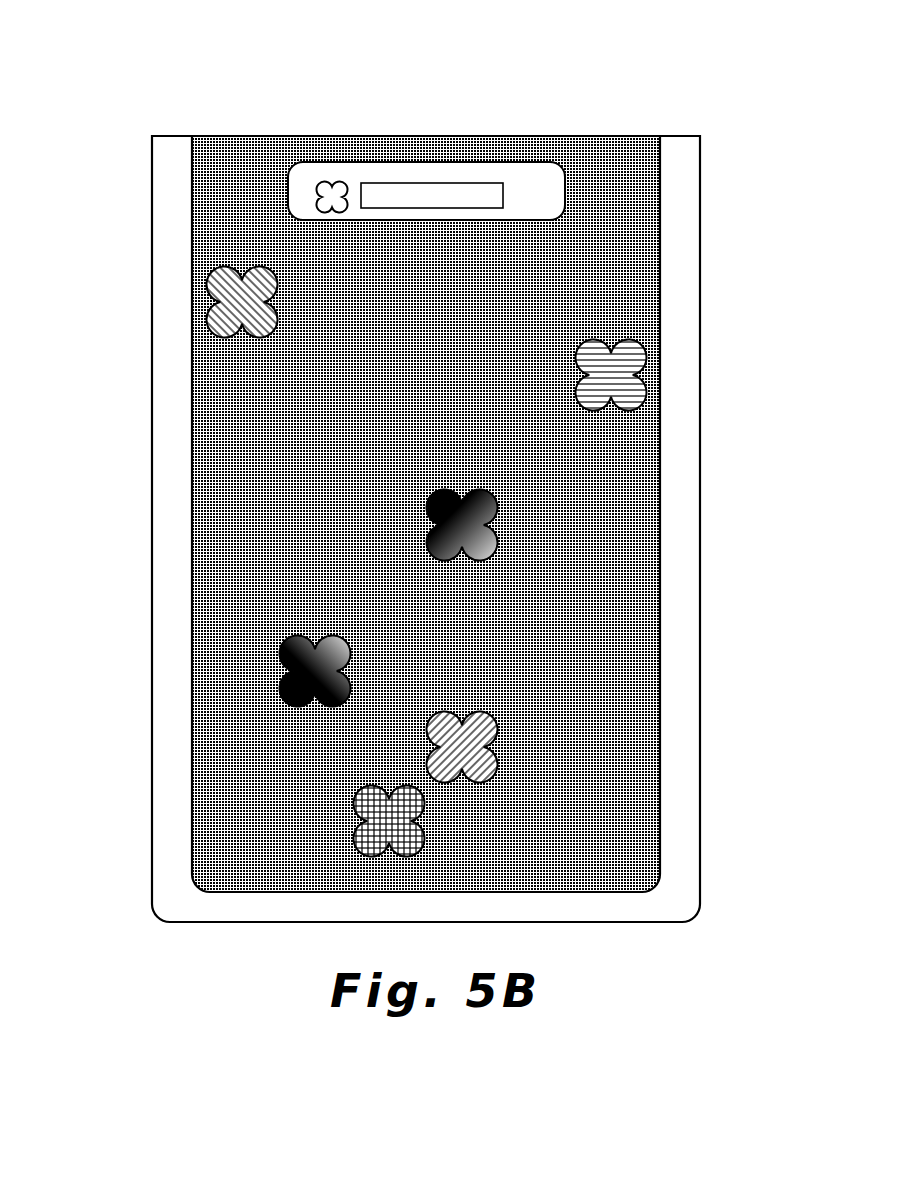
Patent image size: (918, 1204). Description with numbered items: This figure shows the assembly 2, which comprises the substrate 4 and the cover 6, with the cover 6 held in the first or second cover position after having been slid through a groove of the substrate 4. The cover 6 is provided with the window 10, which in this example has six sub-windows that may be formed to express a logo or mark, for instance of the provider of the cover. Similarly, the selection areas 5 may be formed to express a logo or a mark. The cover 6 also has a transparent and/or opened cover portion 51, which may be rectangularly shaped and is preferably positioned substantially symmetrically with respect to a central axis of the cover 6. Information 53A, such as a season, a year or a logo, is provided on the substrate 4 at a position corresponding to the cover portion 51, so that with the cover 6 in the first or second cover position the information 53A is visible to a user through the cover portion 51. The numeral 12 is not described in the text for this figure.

The assembly 2 is at (193, 89).
The housing 12 is at (682, 537).
The cover 6 is at (440, 393).
The cover portion 51 is at (533, 177).
The information 53A is at (422, 192).
The window 10 is at (227, 302).
The substrate 4 is at (627, 377).
The selection areas 5 is at (477, 732).